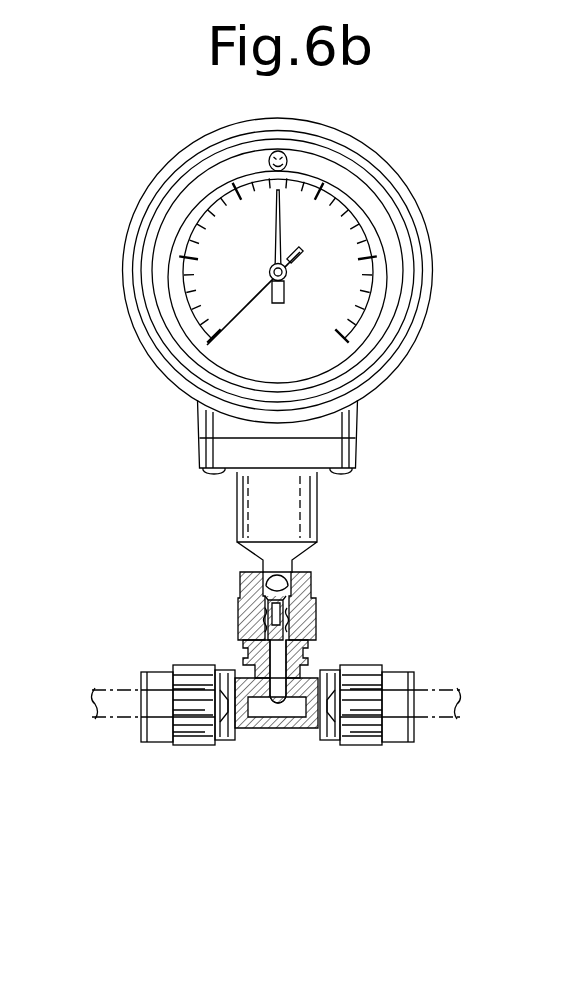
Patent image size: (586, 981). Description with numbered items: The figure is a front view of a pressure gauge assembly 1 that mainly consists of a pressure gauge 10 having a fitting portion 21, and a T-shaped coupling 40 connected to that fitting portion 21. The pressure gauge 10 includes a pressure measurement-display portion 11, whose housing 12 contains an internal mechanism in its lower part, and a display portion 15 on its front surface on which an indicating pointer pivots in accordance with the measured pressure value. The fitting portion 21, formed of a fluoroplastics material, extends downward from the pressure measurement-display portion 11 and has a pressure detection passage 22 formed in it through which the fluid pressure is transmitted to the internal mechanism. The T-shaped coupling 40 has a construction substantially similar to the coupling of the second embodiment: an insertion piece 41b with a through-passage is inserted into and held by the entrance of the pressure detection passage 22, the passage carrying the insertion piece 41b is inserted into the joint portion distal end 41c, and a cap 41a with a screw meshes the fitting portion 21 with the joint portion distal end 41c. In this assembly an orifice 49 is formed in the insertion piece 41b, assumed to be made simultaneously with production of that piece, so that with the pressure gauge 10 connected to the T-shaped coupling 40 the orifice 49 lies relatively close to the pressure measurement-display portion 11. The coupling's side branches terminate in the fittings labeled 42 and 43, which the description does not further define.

The pressure gauge assembly 1 is at (475, 447).
The pressure gauge 10 is at (398, 153).
The pressure measurement-display portion 11 is at (377, 425).
The housing 12 is at (418, 335).
The display portion 15 is at (323, 297).
The fitting portion 21 is at (309, 563).
The pressure detection passage 22 is at (310, 580).
The T-shaped coupling 40 is at (285, 750).
The cap 41a is at (242, 583).
The insertion piece 41b is at (303, 602).
The joint portion distal end 41c is at (302, 627).
The left tube fitting nut 42 is at (177, 750).
The right tube fitting nut 43 is at (387, 752).
The orifice 49 is at (250, 610).